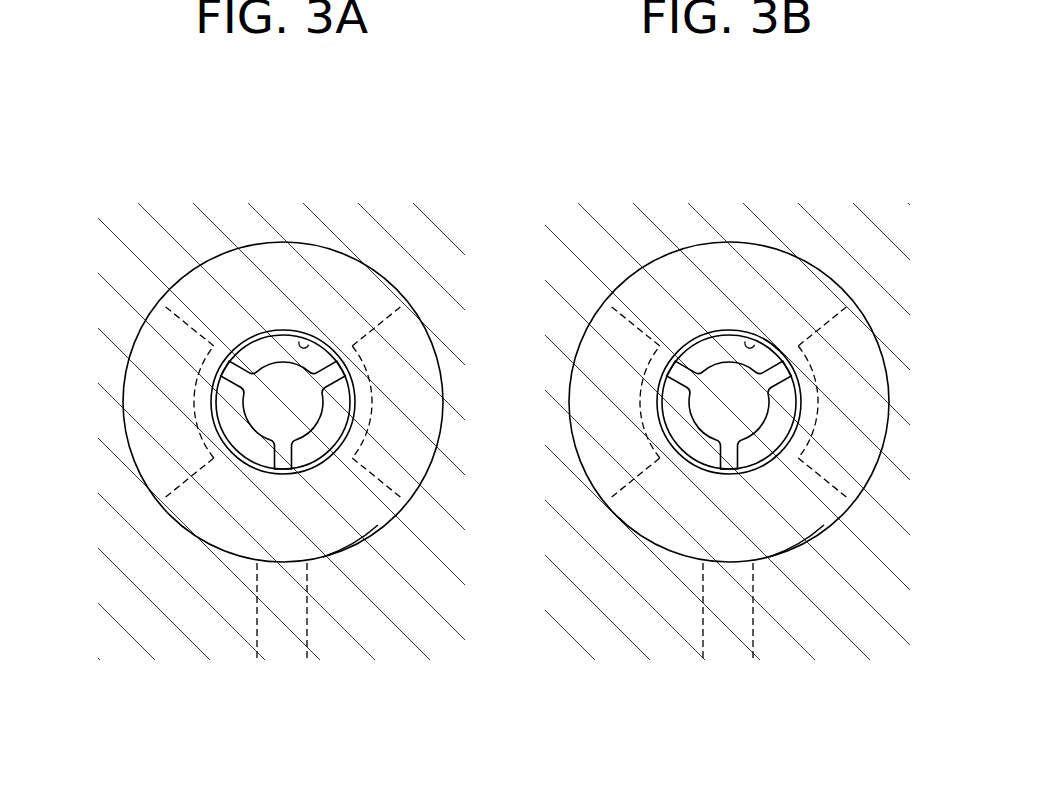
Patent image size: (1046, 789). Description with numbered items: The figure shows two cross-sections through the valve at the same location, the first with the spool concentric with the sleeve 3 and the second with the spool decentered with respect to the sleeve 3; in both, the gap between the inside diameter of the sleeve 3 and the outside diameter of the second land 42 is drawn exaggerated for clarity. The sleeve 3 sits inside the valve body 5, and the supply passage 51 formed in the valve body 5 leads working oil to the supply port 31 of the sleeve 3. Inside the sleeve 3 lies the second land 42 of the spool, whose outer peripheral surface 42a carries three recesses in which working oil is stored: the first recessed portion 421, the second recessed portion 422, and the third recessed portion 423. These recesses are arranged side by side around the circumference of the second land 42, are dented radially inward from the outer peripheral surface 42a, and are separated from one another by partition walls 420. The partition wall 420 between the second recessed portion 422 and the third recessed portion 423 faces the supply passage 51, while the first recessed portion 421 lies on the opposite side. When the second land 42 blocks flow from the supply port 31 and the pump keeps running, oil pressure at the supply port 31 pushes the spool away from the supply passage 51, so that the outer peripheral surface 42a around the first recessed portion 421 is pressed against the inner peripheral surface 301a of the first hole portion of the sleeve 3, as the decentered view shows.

In FIG. 3A, the sleeve 3 is at (300, 246).
In FIG. 3B, the sleeve 3 is at (746, 246).
In FIG. 3A, the supply port 31 is at (340, 540).
In FIG. 3B, the supply port 31 is at (786, 540).
In FIG. 3A, the inner peripheral surface of the first hole portion 301a is at (306, 338).
In FIG. 3B, the inner peripheral surface of the first hole portion 301a is at (752, 338).
In FIG. 3A, the valve body 5 is at (154, 637).
In FIG. 3B, the valve body 5 is at (600, 637).
In FIG. 3A, the supply passage 51 is at (287, 635).
In FIG. 3B, the supply passage 51 is at (733, 635).
In FIG. 3A, the second land 42 is at (297, 416).
In FIG. 3B, the second land 42 is at (743, 416).
In FIG. 3A, the outer peripheral surface 42a is at (267, 331).
In FIG. 3B, the outer peripheral surface 42a is at (714, 331).
In FIG. 3A, the partition wall 420 is at (233, 375).
In FIG. 3B, the partition wall 420 is at (676, 364).
In FIG. 3A, the first recessed portion 421 is at (243, 353).
In FIG. 3B, the first recessed portion 421 is at (694, 358).
In FIG. 3A, the second recessed portion 422 is at (230, 427).
In FIG. 3B, the second recessed portion 422 is at (678, 398).
In FIG. 3A, the third recessed portion 423 is at (325, 422).
In FIG. 3B, the third recessed portion 423 is at (772, 422).